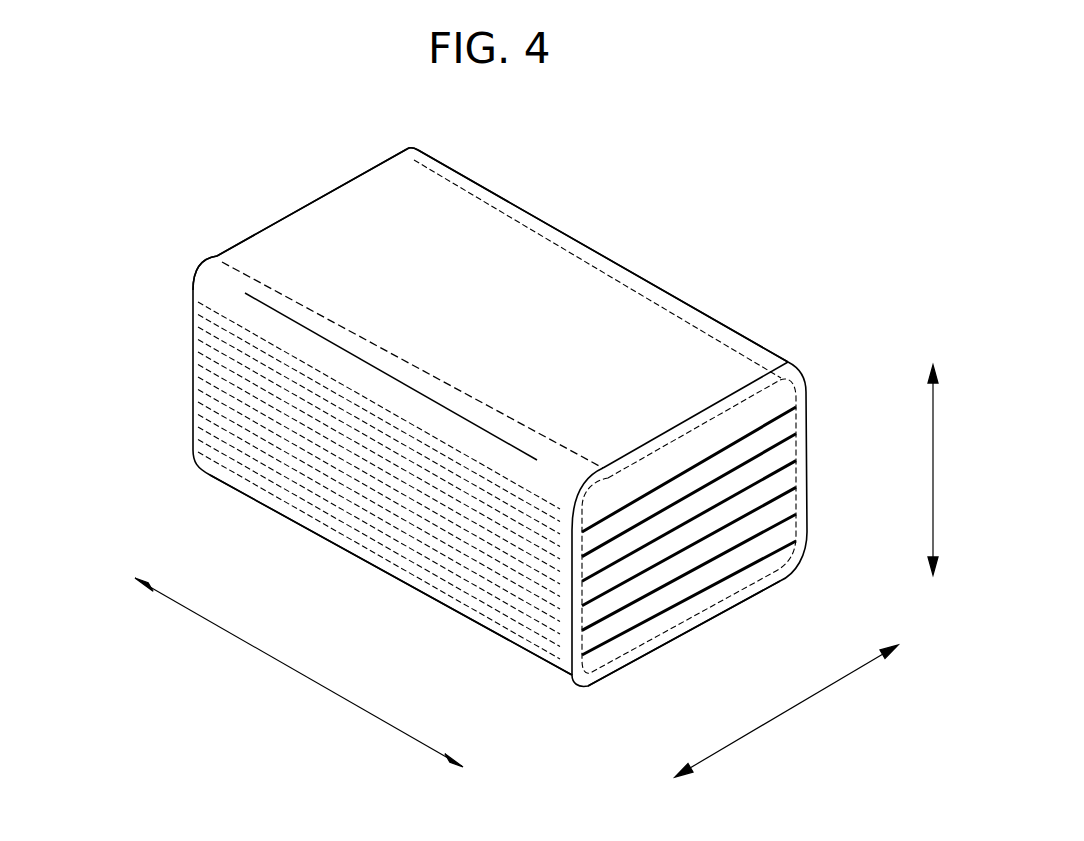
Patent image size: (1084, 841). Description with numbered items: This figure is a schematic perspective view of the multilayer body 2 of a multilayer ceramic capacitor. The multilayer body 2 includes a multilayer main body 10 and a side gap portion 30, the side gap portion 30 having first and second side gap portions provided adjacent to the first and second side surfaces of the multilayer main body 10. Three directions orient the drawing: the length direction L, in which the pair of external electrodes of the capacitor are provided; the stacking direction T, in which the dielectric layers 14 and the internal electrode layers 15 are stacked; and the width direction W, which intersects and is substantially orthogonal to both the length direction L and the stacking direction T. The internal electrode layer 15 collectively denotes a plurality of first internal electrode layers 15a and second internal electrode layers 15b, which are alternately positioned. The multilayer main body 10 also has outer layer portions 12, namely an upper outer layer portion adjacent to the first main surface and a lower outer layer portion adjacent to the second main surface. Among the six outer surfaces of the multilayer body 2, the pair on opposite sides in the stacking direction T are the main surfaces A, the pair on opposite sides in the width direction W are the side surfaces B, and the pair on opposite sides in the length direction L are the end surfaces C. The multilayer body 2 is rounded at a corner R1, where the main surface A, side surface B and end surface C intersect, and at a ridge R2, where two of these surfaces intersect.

The multilayer body 2 is at (737, 212).
The multilayer main body 10 is at (623, 310).
The outer layer portion 12 is at (775, 395).
The dielectric layer 14 is at (777, 508).
The internal electrode layer 15 is at (90, 280).
The first internal electrode layer 15a is at (240, 325).
The second internal electrode layer 15b is at (240, 350).
The side gap portion 30 is at (368, 623).
The corner R1 is at (197, 275).
The ridge R2 is at (558, 228).
The main surface A is at (507, 723).
The side surface B is at (745, 337).
The end surface C is at (323, 197).
The length direction L is at (299, 672).
The width direction W is at (786, 711).
The stacking direction T is at (944, 470).